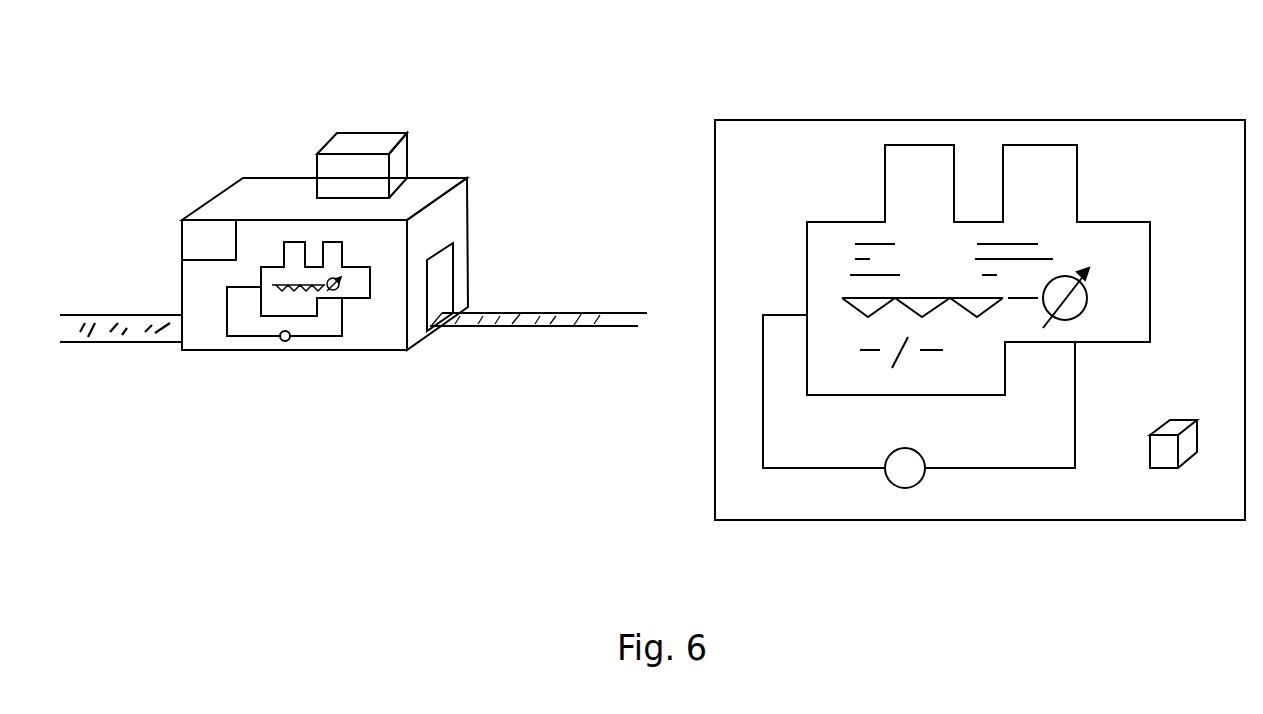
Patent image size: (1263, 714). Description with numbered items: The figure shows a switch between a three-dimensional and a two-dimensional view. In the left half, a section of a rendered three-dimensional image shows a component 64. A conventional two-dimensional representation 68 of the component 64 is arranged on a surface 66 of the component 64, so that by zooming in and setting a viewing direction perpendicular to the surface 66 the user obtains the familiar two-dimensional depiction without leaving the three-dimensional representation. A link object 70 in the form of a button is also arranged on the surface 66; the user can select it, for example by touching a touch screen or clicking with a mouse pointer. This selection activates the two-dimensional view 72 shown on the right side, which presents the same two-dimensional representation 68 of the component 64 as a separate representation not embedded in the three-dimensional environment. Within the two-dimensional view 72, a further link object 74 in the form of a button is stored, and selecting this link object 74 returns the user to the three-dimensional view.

The component 64 is at (425, 190).
The surface 66 is at (212, 328).
The two-dimensional representation 68 is at (350, 302).
The link object 70 is at (182, 237).
The two-dimensional view 72 is at (1138, 152).
The link object 74 is at (1160, 462).